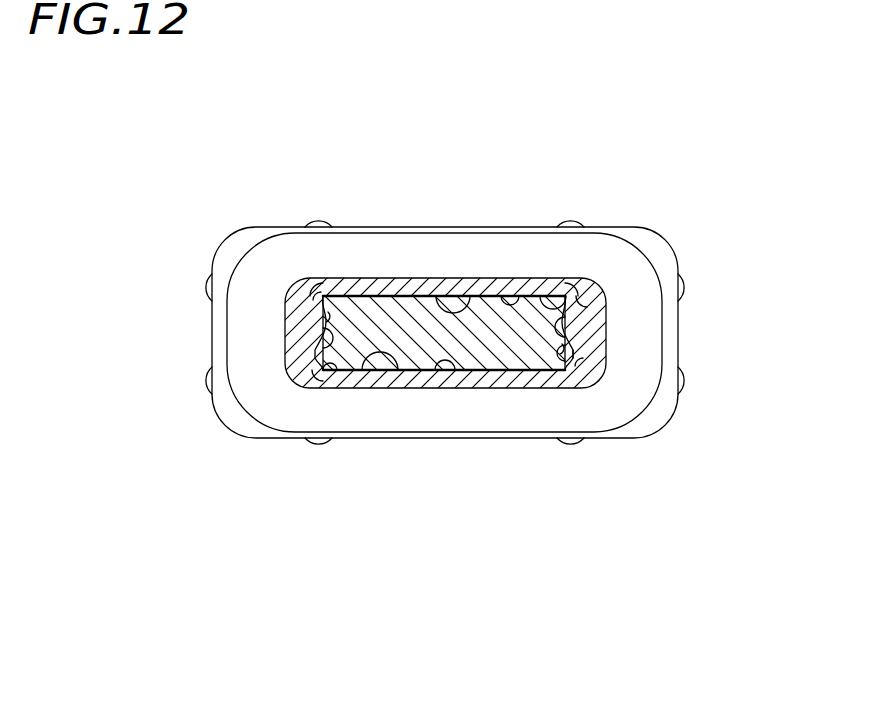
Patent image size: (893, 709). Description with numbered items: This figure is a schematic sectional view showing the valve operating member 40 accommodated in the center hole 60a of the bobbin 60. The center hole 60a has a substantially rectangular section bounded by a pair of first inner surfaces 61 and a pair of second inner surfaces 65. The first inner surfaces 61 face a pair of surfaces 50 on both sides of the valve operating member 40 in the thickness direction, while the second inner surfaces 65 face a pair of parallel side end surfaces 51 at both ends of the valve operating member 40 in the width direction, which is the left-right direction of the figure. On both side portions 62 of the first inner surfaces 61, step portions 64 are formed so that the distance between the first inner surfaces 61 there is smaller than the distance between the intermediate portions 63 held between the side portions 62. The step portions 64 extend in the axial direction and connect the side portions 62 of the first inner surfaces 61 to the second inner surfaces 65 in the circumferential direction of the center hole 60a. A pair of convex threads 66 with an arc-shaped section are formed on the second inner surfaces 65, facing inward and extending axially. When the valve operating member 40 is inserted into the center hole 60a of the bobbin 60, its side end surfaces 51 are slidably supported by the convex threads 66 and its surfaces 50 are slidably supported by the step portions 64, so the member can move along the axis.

The valve operating member 40 is at (526, 348).
The surfaces 50 is at (386, 293).
The side end surfaces 51 is at (315, 296).
The bobbin 60 is at (690, 193).
The center hole 60a is at (576, 358).
The first inner surfaces 61 is at (448, 312).
The both side portions 62 is at (313, 292).
The intermediate portions 63 is at (518, 296).
The step portions 64 is at (317, 365).
The second inner surfaces 65 is at (333, 320).
The convex threads 66 is at (312, 356).